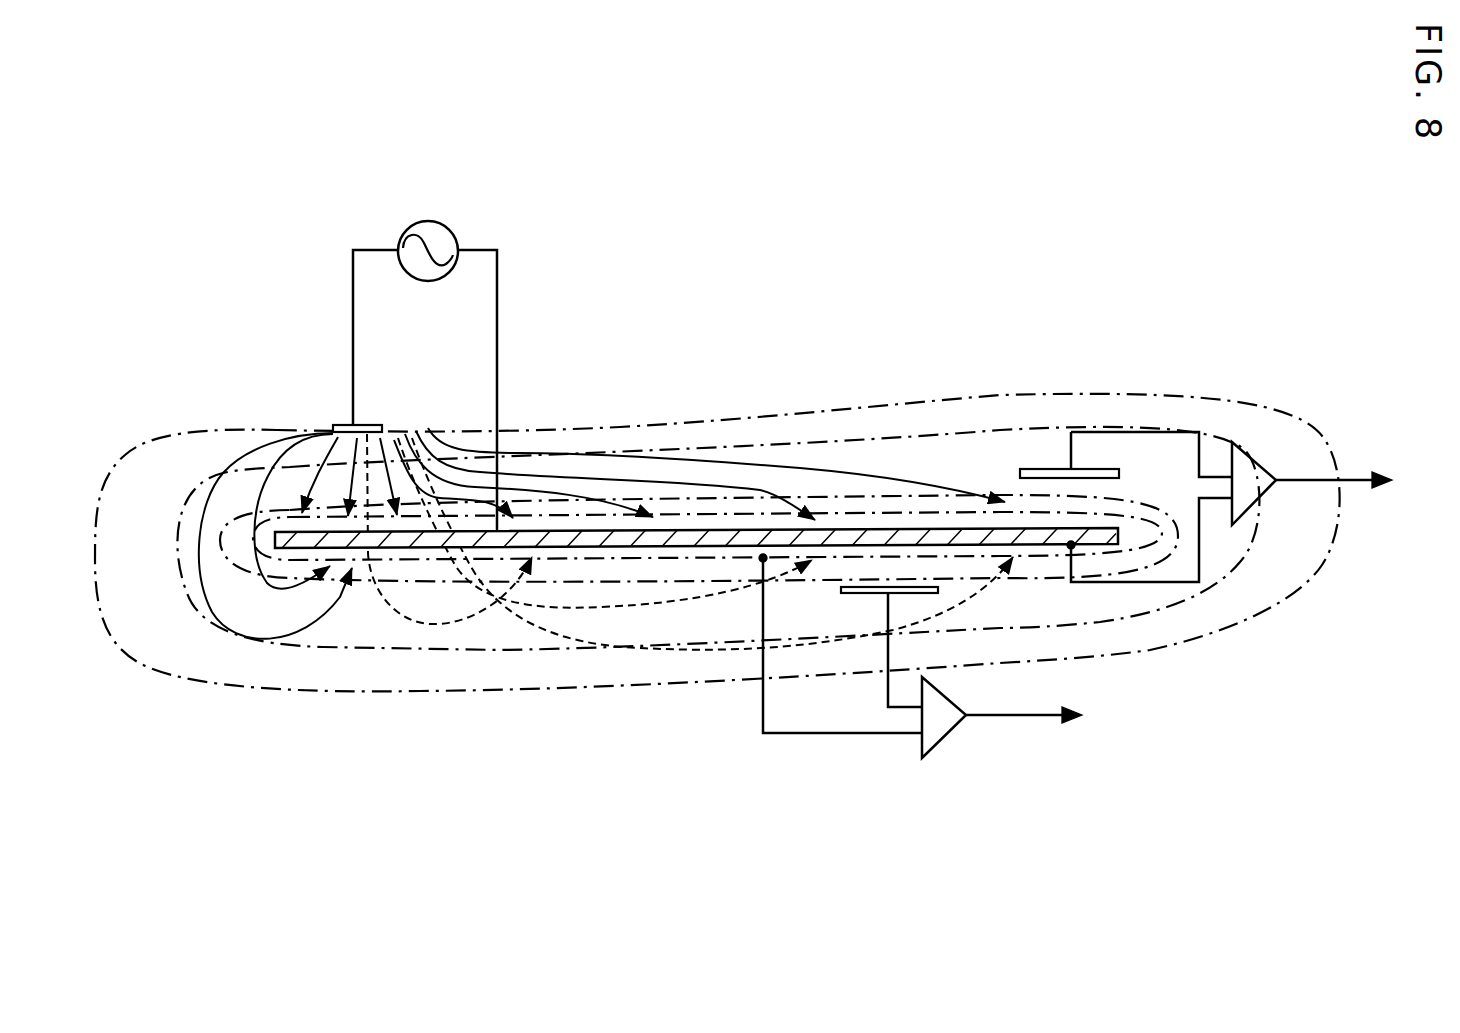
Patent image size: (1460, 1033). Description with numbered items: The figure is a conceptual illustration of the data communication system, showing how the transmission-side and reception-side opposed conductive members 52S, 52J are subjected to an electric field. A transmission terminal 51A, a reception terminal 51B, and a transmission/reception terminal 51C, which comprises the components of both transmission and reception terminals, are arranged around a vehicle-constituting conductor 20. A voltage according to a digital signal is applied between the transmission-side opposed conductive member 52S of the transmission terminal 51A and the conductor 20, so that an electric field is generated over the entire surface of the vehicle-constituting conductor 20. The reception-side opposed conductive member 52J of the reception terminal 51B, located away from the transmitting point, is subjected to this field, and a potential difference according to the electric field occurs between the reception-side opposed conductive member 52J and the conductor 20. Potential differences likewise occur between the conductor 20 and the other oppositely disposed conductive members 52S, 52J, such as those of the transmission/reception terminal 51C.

The vehicle-constituting conductor 20 is at (682, 546).
The transmission terminal 51A is at (533, 258).
The reception terminal 51B is at (1240, 425).
The transmission/reception terminal 51C is at (962, 747).
The transmission-side opposed conductive member 52S is at (340, 425).
The reception-side opposed conductive member 52J is at (1048, 469).